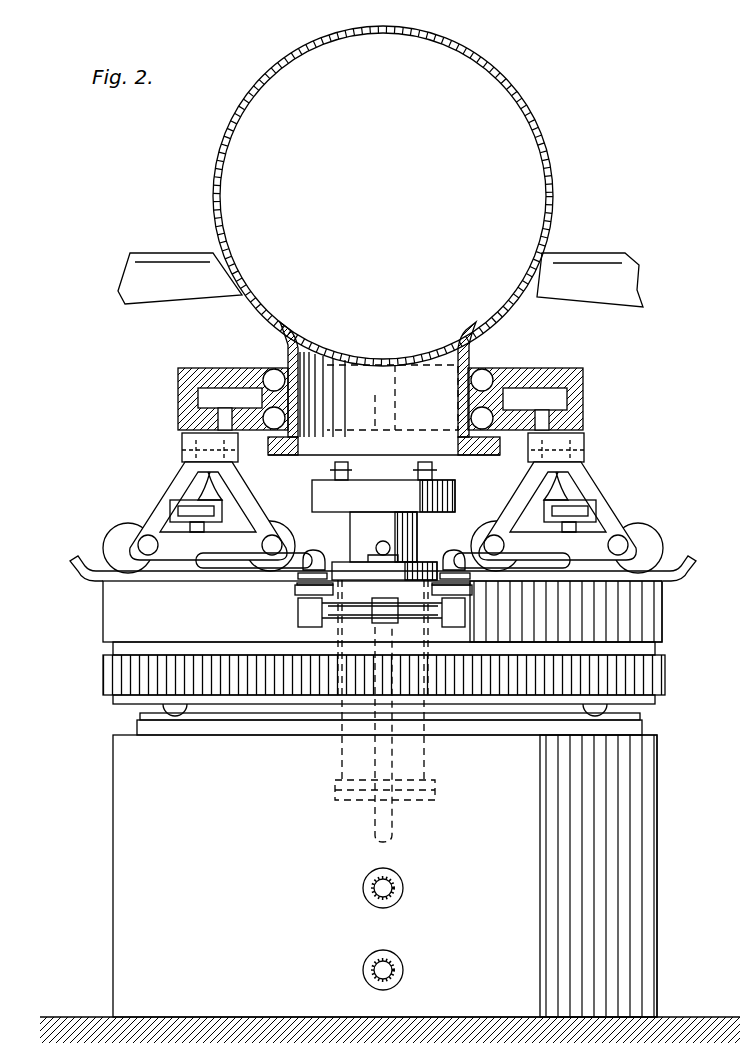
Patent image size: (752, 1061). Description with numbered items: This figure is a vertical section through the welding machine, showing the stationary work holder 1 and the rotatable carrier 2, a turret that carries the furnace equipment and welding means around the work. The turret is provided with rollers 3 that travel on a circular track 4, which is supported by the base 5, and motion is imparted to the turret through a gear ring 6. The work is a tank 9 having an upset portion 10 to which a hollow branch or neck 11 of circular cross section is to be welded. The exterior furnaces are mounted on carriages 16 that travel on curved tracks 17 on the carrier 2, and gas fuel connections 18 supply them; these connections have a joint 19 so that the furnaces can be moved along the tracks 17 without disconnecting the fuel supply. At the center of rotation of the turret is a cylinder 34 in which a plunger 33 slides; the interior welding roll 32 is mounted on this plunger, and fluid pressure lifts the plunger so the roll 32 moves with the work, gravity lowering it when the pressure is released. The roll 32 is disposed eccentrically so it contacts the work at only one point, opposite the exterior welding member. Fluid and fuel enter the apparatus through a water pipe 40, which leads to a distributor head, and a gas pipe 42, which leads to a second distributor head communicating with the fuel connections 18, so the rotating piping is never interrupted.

The work holder 1 is at (168, 258).
The carrier 2 is at (110, 635).
The rollers 3 is at (186, 708).
The circular track 4 is at (135, 727).
The base 5 is at (122, 815).
The gear ring 6 is at (115, 680).
The tank 9 is at (520, 200).
The upset portion 10 is at (300, 378).
The hollow branch or neck 11 is at (376, 445).
The carriages 16 is at (130, 520).
The curved tracks 17 is at (70, 562).
The fuel connections 18 is at (474, 525).
The joint 19 is at (462, 560).
The interior welding roll 32 is at (361, 487).
The plunger 33 is at (362, 530).
The cylinder 34 is at (435, 785).
The water pipe 40 is at (395, 973).
The gas pipe 42 is at (395, 891).